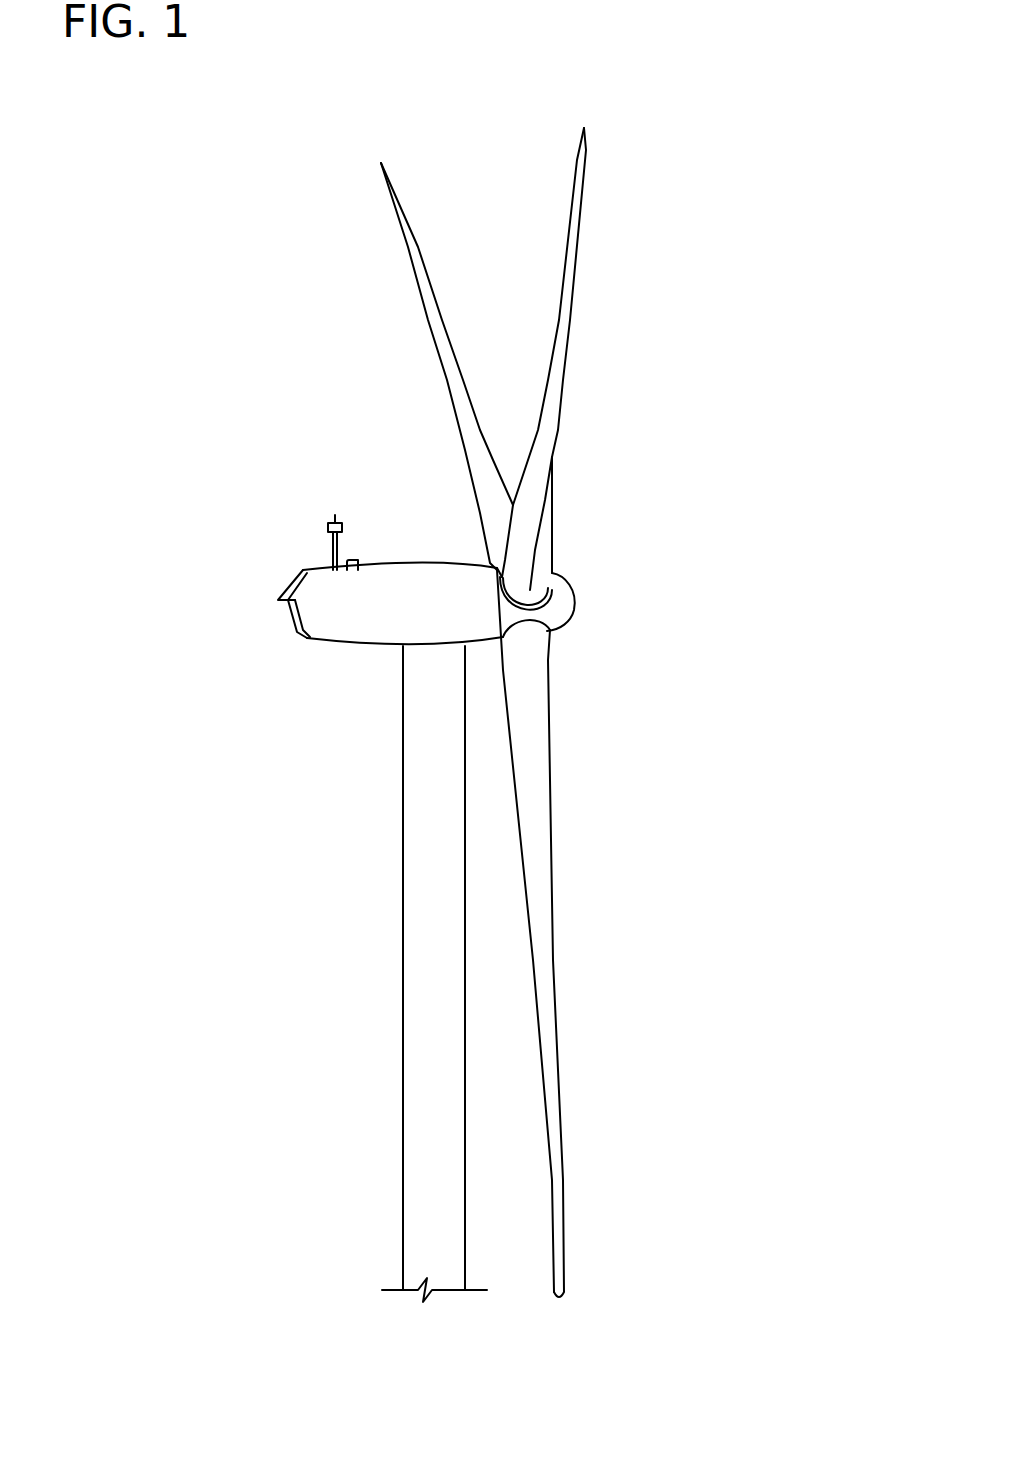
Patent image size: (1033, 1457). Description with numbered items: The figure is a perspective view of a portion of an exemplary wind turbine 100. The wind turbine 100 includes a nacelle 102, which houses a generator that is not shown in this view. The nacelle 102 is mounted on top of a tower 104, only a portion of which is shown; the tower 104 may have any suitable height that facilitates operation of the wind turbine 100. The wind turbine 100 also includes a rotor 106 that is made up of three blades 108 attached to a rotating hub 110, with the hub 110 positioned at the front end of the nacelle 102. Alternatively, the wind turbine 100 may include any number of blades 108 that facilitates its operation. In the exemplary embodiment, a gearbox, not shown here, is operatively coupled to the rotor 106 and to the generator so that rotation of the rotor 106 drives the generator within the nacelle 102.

The wind turbine 100 is at (268, 212).
The nacelle 102 is at (335, 642).
The tower 104 is at (402, 920).
The rotor 106 is at (623, 343).
The blades 108 is at (418, 247).
The rotating hub 110 is at (571, 616).